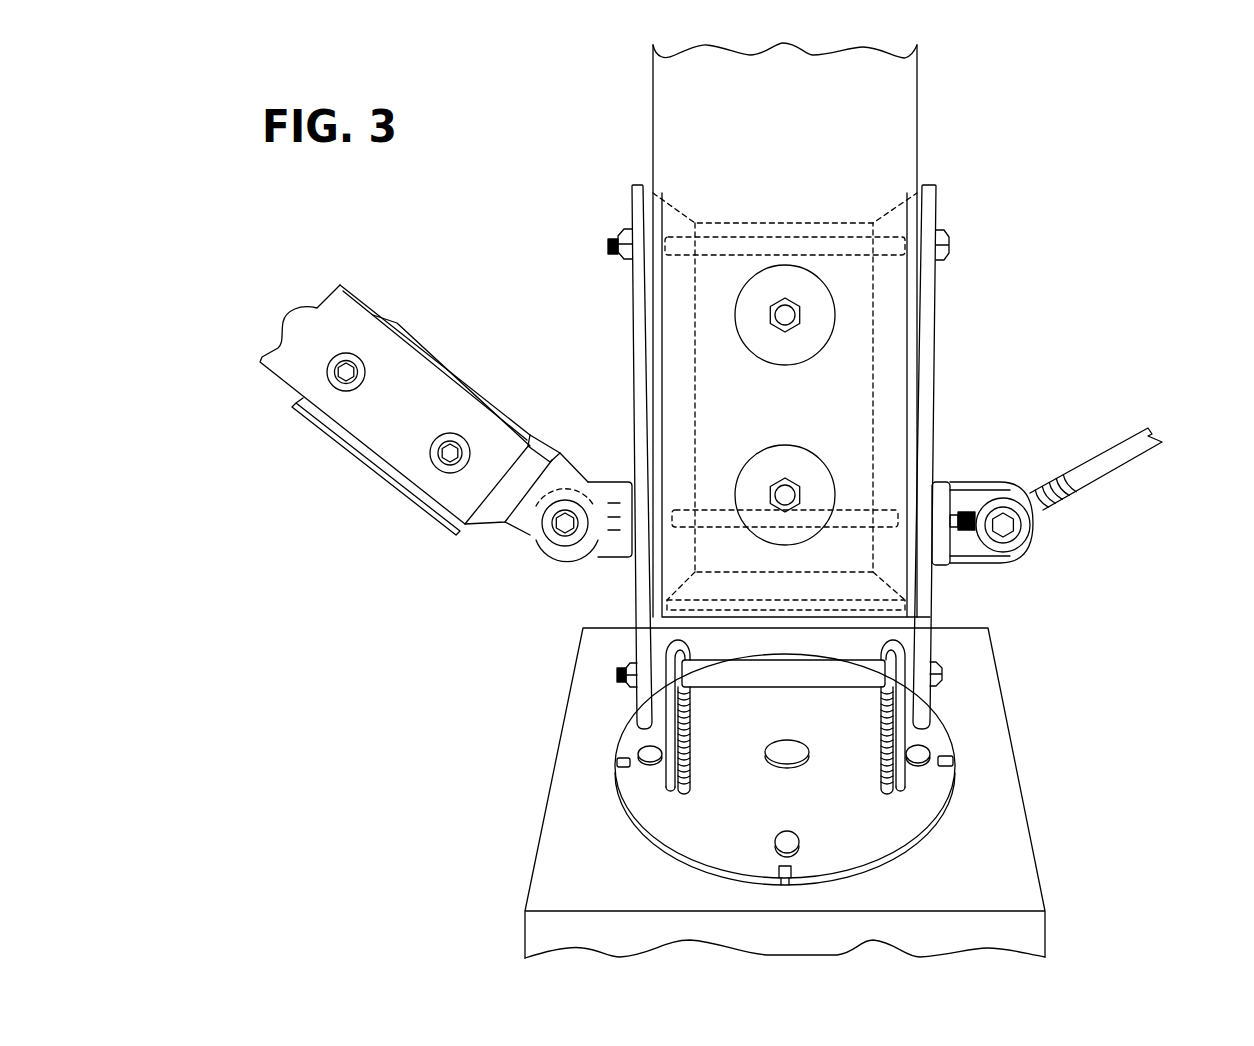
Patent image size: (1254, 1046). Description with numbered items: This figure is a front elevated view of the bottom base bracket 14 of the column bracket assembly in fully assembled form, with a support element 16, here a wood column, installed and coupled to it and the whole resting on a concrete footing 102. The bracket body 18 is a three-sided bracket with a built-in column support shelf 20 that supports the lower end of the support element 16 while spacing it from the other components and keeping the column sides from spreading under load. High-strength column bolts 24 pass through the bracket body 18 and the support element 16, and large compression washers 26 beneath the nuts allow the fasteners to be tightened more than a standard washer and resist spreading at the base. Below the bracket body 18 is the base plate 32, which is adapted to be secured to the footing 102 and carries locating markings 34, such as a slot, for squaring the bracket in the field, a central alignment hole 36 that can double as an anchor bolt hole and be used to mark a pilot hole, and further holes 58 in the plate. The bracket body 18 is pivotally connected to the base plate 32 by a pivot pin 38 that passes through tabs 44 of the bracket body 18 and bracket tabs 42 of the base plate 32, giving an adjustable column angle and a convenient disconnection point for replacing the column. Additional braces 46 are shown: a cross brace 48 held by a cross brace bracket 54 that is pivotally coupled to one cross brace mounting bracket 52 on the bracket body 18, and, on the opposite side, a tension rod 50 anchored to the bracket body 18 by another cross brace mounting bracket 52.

The bottom base bracket 14 is at (1100, 164).
The support element 16 is at (855, 130).
The bracket body 18 is at (928, 352).
The column support shelf 20 is at (918, 585).
The column bolts 24 is at (787, 307).
The compression washers 26 is at (818, 310).
The base plate 32 is at (920, 803).
The locating markings 34 is at (806, 898).
The central alignment hole 36 is at (793, 767).
The pivot pin 38 is at (938, 680).
The bracket tabs 42 is at (955, 763).
The tabs of the bracket body 44 is at (670, 767).
The additional braces 46 is at (401, 289).
The cross brace 48 is at (310, 348).
The tension rod 50 is at (1063, 477).
The cross brace mounting brackets 52 is at (1037, 543).
The cross brace bracket 54 is at (407, 485).
The aperture 58 is at (928, 747).
The footing 102 is at (580, 888).